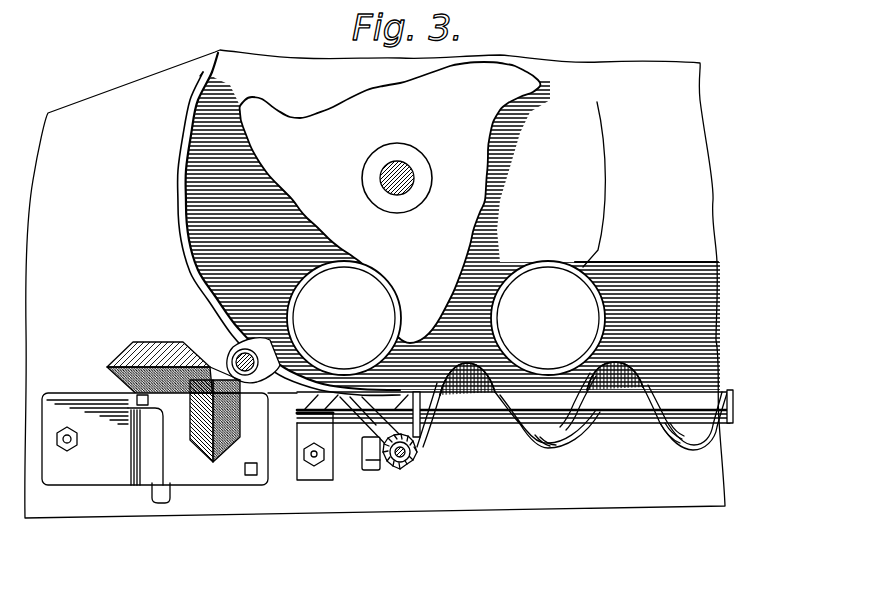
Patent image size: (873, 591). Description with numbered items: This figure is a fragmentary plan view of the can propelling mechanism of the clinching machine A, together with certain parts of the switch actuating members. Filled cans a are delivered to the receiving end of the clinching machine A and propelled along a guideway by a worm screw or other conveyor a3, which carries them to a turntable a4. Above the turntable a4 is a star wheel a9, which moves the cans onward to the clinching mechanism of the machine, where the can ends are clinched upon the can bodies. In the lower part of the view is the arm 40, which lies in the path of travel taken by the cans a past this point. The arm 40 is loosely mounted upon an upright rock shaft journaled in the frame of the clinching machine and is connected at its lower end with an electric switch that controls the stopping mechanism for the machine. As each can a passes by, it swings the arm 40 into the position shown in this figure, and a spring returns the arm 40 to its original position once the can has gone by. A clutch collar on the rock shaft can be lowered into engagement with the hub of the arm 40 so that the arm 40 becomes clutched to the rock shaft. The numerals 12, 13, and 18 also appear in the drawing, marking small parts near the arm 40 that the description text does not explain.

The clinching machine A is at (760, 140).
The filled cans a is at (446, 318).
The worm screw conveyor a3 is at (737, 418).
The turntable a4 is at (218, 243).
The star wheel a9 is at (390, 202).
The pawl block 12 is at (400, 470).
The ratchet wheel 13 is at (413, 448).
The pivot pin 18 is at (417, 447).
The arm 40 is at (383, 433).